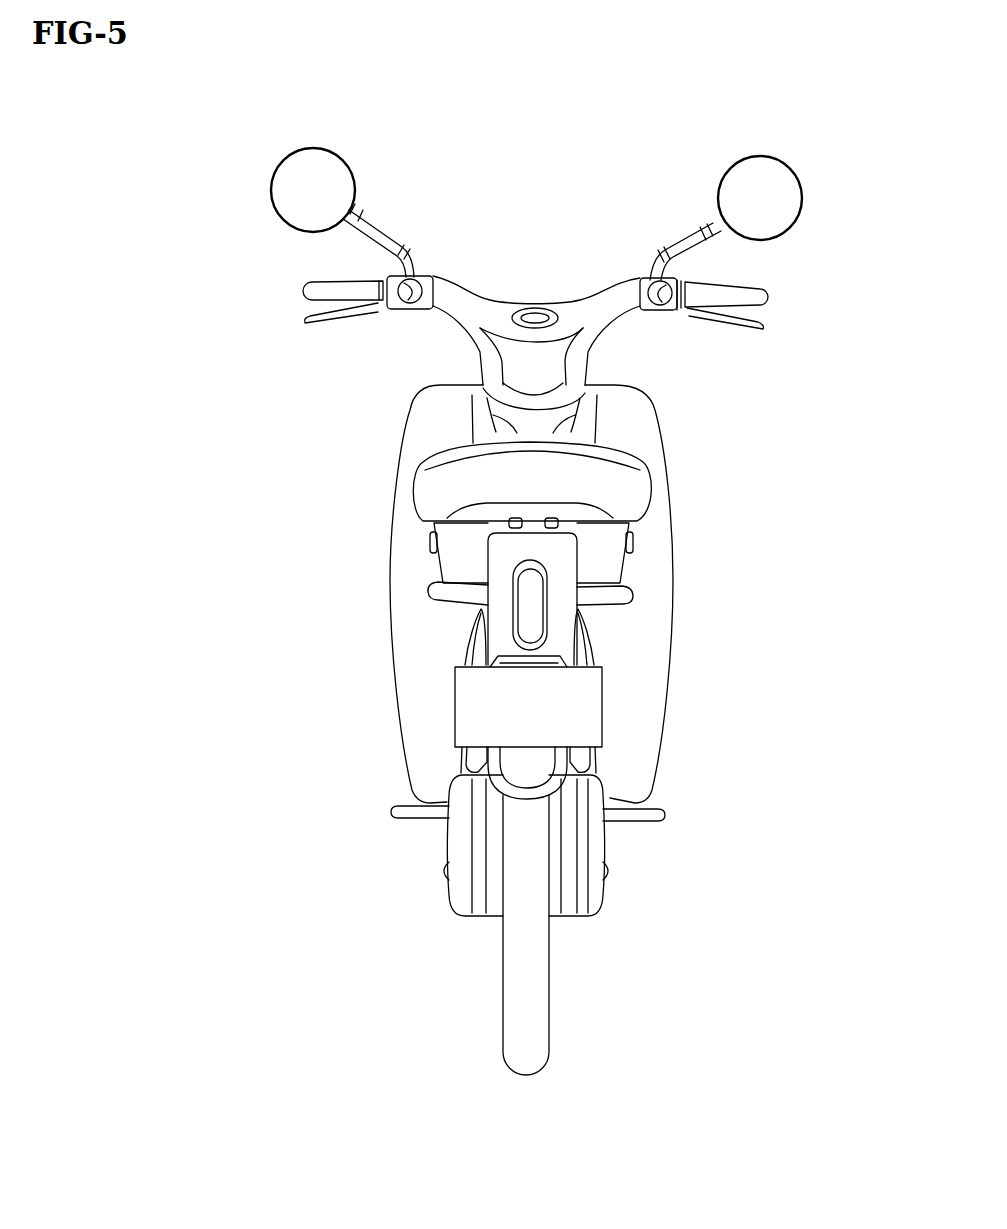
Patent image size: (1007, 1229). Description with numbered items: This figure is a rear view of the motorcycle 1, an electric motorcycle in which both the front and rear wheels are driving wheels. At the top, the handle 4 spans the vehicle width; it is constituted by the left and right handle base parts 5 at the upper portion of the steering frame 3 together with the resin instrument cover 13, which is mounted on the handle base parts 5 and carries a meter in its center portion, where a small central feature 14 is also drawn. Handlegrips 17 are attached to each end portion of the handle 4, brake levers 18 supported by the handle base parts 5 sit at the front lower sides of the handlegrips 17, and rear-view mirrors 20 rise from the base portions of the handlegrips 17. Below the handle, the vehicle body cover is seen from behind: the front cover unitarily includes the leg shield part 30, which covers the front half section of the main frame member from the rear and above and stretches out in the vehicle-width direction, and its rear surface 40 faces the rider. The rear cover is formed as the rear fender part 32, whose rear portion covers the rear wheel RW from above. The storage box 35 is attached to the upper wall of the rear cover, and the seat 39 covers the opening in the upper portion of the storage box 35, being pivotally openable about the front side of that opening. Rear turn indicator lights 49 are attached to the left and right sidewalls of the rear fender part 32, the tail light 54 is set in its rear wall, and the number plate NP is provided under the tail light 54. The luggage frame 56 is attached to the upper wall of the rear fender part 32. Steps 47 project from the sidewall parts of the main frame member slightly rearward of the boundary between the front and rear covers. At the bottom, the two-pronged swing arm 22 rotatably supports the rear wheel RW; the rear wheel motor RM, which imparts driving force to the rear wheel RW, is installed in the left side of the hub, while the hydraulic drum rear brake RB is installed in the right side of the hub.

The motorcycle 1 is at (530, 178).
The steering frame 3 is at (567, 351).
The handle 4 is at (531, 299).
The handle base parts 5 is at (443, 307).
The instrument cover 13 is at (473, 298).
The handlebar center hole 14 is at (536, 311).
The handlegrips 17 is at (307, 290).
The brake levers 18 is at (308, 323).
The rear-view mirrors 20 is at (277, 173).
The swing arm 22 is at (467, 768).
The leg shield part 30 is at (663, 600).
The rear fender part 32 is at (570, 634).
The storage box 35 is at (610, 535).
The seat 39 is at (613, 475).
The rear surface 40 is at (497, 417).
The steps 47 is at (392, 810).
The rear turn indicator lights 49 is at (427, 588).
The tail light 54 is at (527, 617).
The luggage frame 56 is at (603, 498).
The number plate NP is at (573, 704).
The rear wheel motor RM is at (465, 845).
The rear brake RB is at (607, 845).
The rear wheel RW is at (537, 1001).